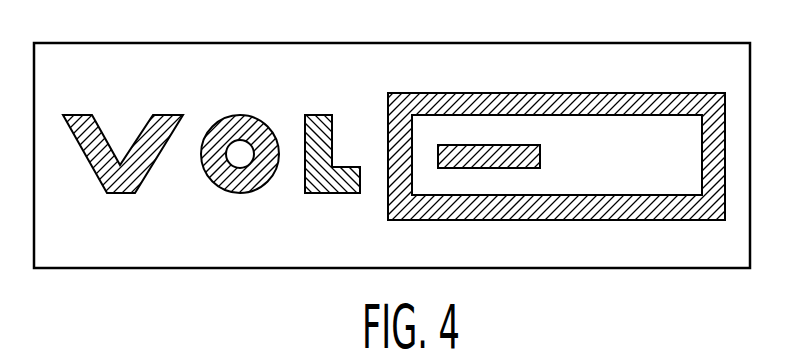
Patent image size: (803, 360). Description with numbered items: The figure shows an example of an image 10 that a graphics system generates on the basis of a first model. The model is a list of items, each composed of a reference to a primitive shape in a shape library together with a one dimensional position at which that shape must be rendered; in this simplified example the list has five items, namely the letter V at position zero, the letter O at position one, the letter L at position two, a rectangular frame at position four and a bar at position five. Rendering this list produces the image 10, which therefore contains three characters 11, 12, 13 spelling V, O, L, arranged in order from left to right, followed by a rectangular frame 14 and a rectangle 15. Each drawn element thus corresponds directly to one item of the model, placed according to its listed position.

The image 10 is at (165, 43).
The character V 11 is at (79, 118).
The character O 12 is at (238, 115).
The character L 13 is at (316, 115).
The rectangular frame 14 is at (535, 93).
The rectangle 15 is at (540, 153).